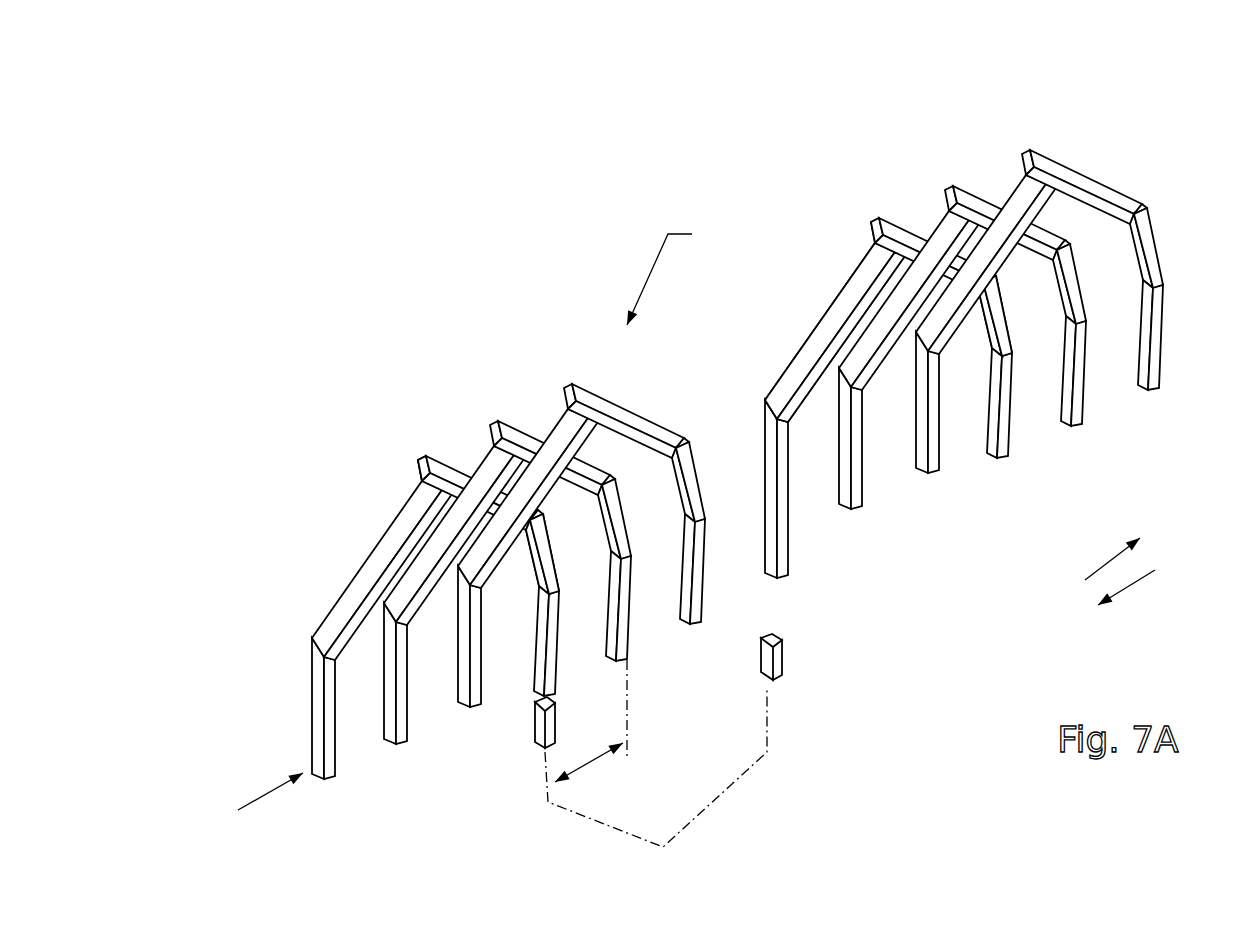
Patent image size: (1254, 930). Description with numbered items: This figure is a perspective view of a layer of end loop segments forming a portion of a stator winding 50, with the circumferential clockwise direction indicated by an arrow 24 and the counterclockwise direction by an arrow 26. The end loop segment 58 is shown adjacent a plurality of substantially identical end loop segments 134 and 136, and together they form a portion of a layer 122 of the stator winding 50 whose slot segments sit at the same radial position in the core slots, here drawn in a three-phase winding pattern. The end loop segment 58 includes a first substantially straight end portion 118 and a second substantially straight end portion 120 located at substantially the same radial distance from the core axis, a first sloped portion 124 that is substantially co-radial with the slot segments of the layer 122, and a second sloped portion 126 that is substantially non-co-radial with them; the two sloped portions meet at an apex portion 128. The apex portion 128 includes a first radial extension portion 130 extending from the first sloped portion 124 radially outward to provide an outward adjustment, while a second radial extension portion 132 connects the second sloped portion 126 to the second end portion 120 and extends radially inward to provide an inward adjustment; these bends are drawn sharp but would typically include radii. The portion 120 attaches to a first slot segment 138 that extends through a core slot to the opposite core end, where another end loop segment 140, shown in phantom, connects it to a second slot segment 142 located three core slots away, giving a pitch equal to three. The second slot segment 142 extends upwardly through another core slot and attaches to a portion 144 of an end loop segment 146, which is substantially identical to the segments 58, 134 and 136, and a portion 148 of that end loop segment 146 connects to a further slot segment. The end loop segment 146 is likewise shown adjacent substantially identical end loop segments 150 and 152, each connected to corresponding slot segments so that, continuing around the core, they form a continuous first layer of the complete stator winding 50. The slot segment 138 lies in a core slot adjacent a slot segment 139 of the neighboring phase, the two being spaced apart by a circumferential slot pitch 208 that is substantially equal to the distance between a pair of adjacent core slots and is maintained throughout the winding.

The arrow 24 is at (1090, 565).
The arrow 26 is at (1150, 578).
The stator winding 50 is at (675, 272).
The end loop segment 58 is at (418, 470).
The first substantially straight end portion 118 is at (317, 703).
The second substantially straight end portion 120 is at (560, 643).
The layer 122 is at (258, 797).
The first sloped portion 124 is at (365, 578).
The second sloped portion 126 is at (470, 466).
The apex portion 128 is at (415, 480).
The first radial extension portion 130 is at (420, 462).
The second radial extension portion 132 is at (553, 578).
The end loop segment 134 is at (522, 432).
The end loop segment 136 is at (600, 390).
The first slot segment 138 is at (534, 705).
The slot segment 139 is at (632, 628).
The end loop segment 140 is at (725, 792).
The second slot segment 142 is at (786, 568).
The portion 144 is at (788, 540).
The end loop segment 146 is at (832, 313).
The portion 148 is at (1010, 440).
The end loop segment 150 is at (955, 195).
The end loop segment 152 is at (1090, 170).
The circumferential slot pitch 208 is at (592, 763).